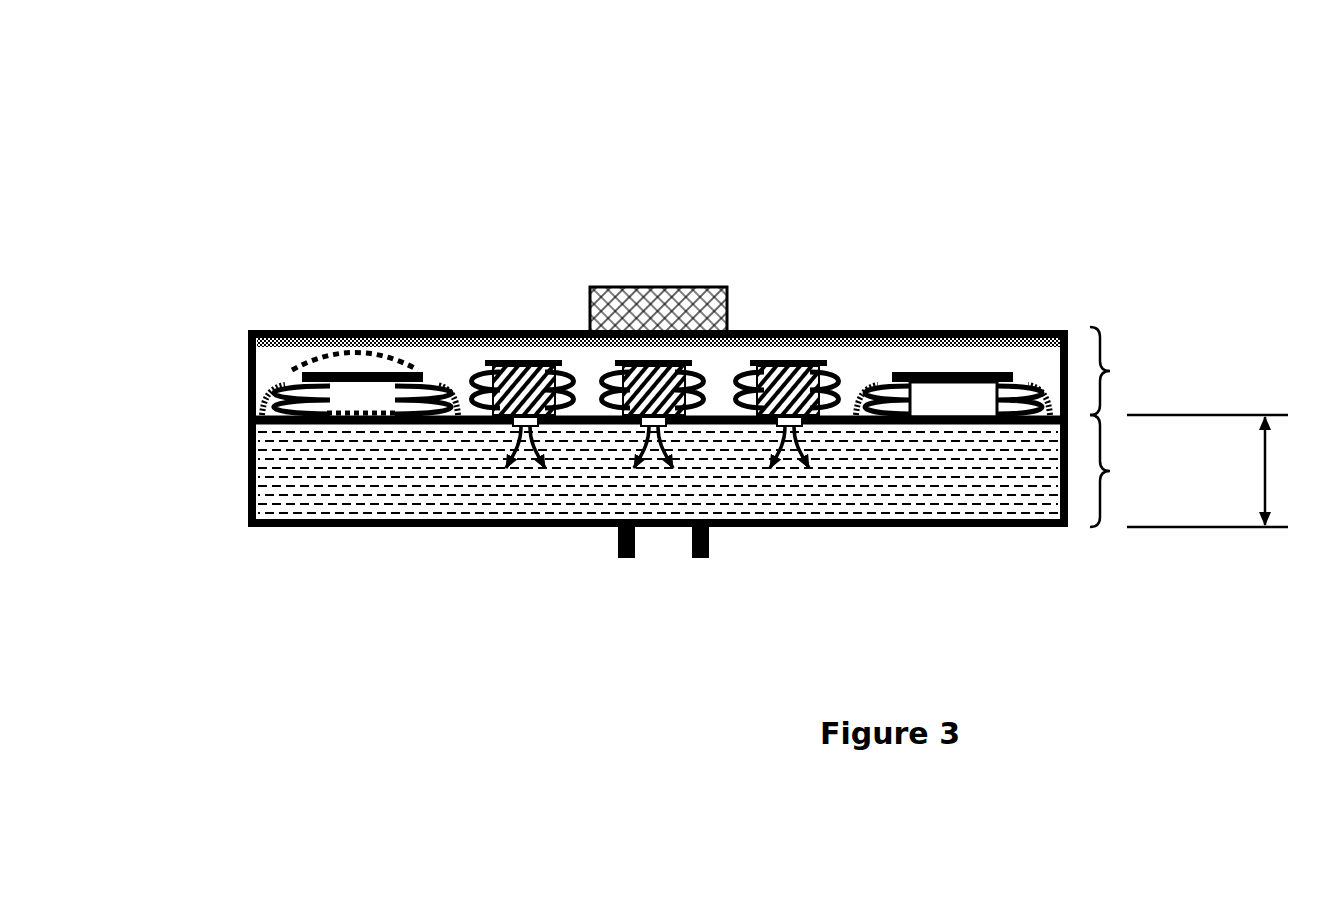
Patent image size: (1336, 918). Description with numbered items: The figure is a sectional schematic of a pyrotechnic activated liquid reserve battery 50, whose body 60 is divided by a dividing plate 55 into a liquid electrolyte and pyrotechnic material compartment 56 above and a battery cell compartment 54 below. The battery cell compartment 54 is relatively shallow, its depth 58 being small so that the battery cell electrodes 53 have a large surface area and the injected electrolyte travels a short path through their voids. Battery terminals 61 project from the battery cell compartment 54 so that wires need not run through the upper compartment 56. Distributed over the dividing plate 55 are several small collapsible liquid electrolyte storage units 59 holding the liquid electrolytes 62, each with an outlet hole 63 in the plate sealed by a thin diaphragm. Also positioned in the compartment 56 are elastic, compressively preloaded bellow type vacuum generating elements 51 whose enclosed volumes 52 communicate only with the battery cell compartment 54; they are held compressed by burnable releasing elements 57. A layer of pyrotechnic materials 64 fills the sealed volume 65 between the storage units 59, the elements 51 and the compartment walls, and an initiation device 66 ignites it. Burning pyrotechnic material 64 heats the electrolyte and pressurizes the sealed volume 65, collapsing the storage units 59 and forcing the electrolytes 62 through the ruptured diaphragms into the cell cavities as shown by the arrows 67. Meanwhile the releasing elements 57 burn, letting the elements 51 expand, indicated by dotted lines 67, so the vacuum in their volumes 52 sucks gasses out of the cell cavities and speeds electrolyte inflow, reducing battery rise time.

The liquid reserve battery 50 is at (1103, 127).
The vacuum generating elements 51 is at (357, 365).
The enclosed volumes 52 is at (363, 390).
The battery cell electrodes 53 is at (377, 478).
The battery cell compartment 54 is at (1127, 471).
The dividing plate 55 is at (479, 427).
The liquid electrolyte and pyrotechnic material compartment 56 is at (1127, 371).
The releasing elements 57 is at (858, 385).
The depth of the battery cell compartment 58 is at (1224, 471).
The collapsible liquid electrolyte storage units 59 is at (475, 363).
The liquid reserve battery body 60 is at (238, 492).
The terminals 61 is at (628, 563).
The liquid electrolytes 62 is at (458, 376).
The outlet hole 63 is at (805, 430).
The pyrotechnic materials 64 is at (268, 356).
The sealed volume 65 is at (588, 373).
The initiation device 66 is at (652, 280).
The arrows 67 is at (434, 365).